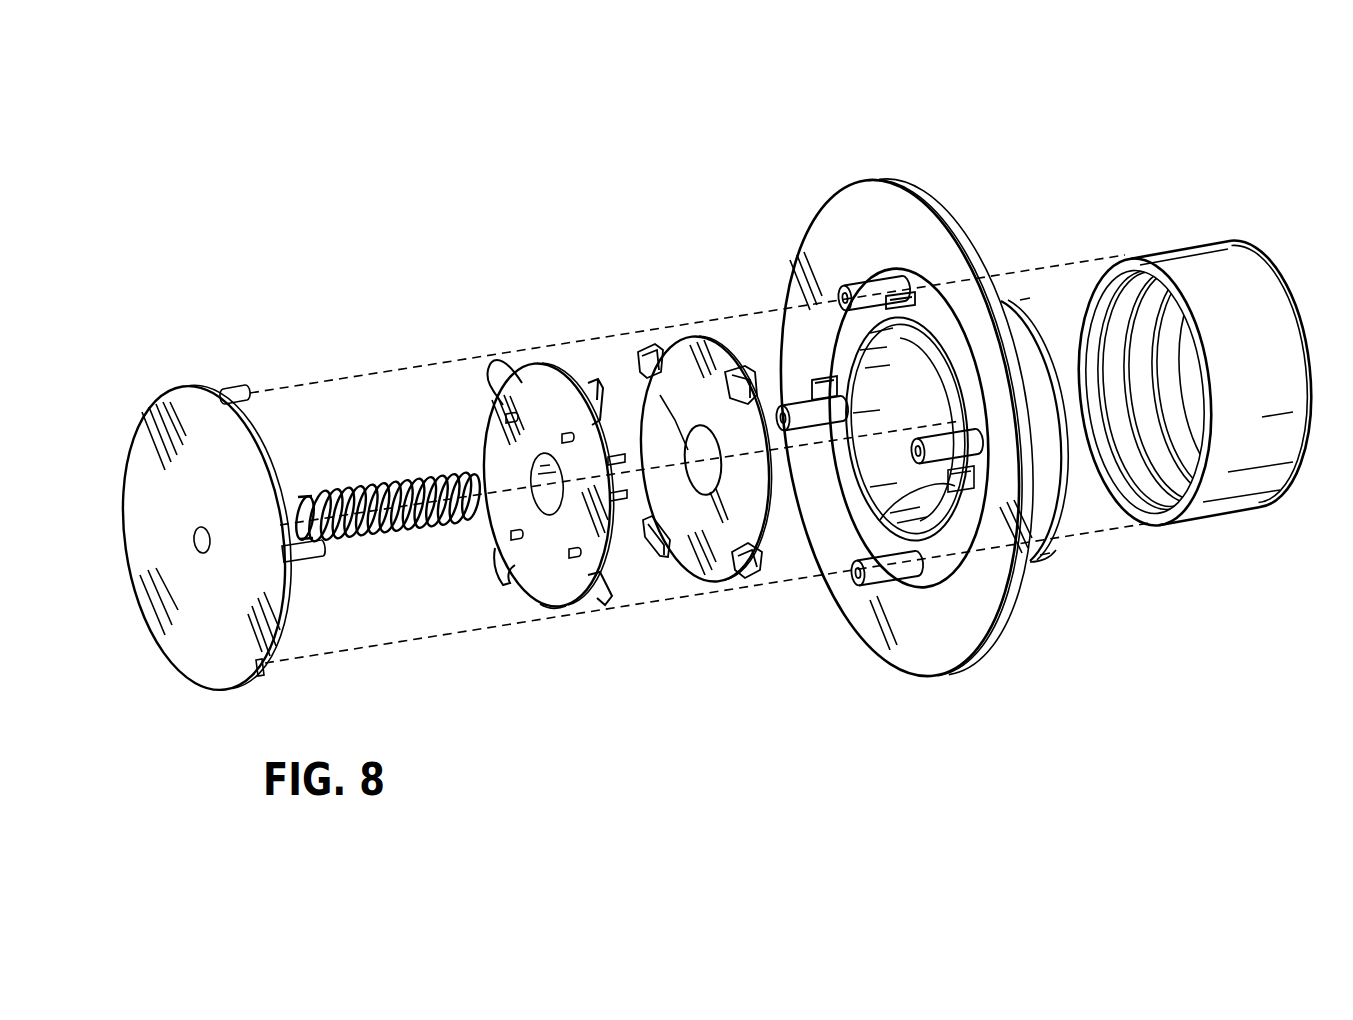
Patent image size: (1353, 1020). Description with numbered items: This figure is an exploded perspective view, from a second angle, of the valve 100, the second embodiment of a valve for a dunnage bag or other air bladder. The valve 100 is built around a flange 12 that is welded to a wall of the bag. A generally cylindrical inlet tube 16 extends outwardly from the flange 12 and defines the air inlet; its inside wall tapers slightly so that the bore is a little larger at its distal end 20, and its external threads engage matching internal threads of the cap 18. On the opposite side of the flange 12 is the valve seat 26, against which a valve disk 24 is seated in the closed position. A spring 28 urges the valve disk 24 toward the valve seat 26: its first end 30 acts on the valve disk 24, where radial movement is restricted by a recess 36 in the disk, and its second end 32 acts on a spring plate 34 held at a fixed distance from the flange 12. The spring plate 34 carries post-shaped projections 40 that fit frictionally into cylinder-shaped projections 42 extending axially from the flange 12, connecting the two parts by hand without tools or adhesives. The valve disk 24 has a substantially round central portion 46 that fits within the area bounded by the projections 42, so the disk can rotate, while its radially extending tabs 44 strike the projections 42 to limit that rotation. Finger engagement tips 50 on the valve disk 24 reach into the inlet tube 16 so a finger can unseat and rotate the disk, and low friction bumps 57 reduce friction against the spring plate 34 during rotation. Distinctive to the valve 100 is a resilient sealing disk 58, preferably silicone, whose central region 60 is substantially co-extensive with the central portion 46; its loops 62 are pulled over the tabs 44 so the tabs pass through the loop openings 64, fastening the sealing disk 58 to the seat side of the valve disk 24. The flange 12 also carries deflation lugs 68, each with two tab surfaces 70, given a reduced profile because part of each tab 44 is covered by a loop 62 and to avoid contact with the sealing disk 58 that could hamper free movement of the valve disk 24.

The valve 100 is at (396, 158).
The flange 12 is at (878, 196).
The inlet tube 16 is at (1055, 494).
The cap 18 is at (1242, 484).
The distal end 20 is at (1036, 320).
The valve disk 24 is at (553, 390).
The valve seat 26 is at (922, 334).
The spring 28 is at (392, 525).
The first end 30 is at (470, 487).
The second end 32 is at (303, 500).
The spring plate 34 is at (168, 512).
The recess 36 is at (536, 501).
The projections 40 is at (236, 386).
The projections 42 is at (868, 292).
The tabs 44 is at (617, 602).
The central portion 46 is at (560, 607).
The finger engagement tips 50 is at (628, 498).
The low friction bumps 57 is at (512, 411).
The sealing disk 58 is at (646, 424).
The central region 60 is at (712, 341).
The loops 62 is at (655, 351).
The loop openings 64 is at (748, 582).
The deflation lugs 68 is at (962, 490).
The tab surfaces 70 is at (946, 488).